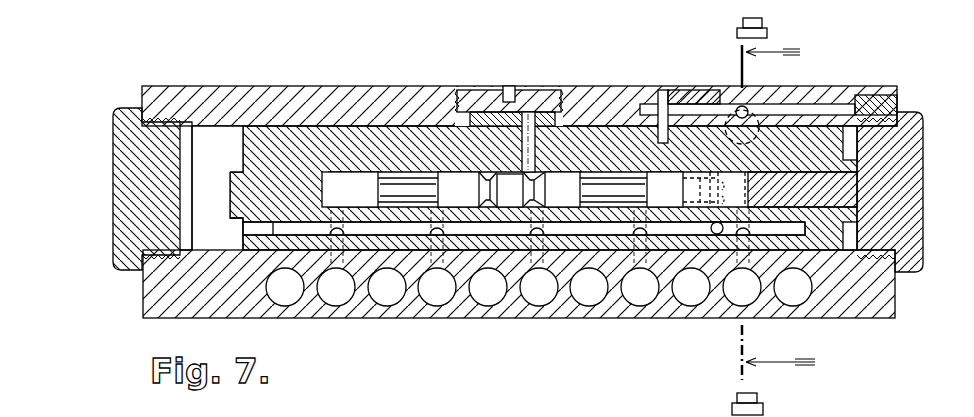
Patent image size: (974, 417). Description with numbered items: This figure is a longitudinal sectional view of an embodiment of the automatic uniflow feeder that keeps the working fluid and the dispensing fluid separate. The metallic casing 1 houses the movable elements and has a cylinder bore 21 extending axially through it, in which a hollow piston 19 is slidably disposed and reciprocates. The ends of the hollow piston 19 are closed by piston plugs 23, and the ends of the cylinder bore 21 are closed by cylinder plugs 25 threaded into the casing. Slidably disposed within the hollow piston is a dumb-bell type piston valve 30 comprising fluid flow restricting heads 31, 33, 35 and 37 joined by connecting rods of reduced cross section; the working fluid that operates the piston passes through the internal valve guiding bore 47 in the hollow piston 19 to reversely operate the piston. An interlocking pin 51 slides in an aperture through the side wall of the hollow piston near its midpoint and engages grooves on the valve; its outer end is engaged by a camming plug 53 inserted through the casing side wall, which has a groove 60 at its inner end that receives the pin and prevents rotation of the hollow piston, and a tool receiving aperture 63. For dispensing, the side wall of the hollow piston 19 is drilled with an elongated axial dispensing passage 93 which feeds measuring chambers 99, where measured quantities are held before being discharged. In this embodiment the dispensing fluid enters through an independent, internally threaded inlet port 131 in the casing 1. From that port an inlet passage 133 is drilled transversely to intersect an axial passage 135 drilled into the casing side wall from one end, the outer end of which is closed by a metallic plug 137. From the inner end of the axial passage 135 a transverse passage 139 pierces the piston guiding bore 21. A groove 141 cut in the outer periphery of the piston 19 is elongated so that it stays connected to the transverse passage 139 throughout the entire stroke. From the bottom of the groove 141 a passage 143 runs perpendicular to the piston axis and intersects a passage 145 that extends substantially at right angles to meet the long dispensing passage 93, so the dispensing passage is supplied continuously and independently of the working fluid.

The casing 1 is at (339, 103).
The hollow piston 19 is at (243, 144).
The cylinder bore 21 is at (238, 128).
The piston plug 23 is at (240, 186).
The cylinder plug 25 is at (126, 179).
The piston valve 30 is at (521, 189).
The fluid flow restricting head 31 is at (380, 189).
The fluid flow restricting head 33 is at (467, 189).
The fluid flow restricting head 35 is at (596, 189).
The fluid flow restricting head 37 is at (681, 189).
The valve guiding bore 47 is at (404, 178).
The interlocking pin 51 is at (519, 120).
The camming plug 53 is at (466, 100).
The groove 60 is at (526, 138).
The tool receiving aperture 63 is at (510, 94).
The dispensing passage 93 is at (313, 232).
The measuring chamber 99 is at (383, 300).
The dispensing fluid inlet port 131 is at (770, 100).
The inlet passage 133 is at (728, 107).
The axial passage 135 is at (694, 108).
The plug 137 is at (899, 106).
The transverse passage 139 is at (652, 107).
The groove 141 is at (664, 112).
The passage 143 is at (732, 189).
The passage 145 is at (734, 200).